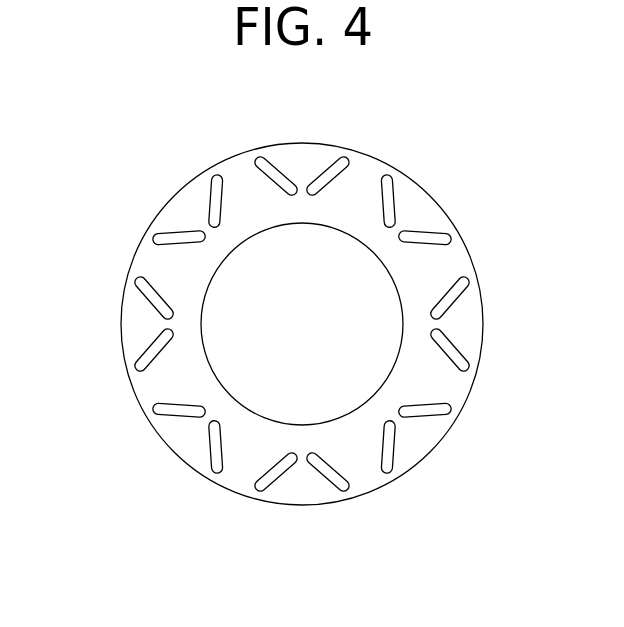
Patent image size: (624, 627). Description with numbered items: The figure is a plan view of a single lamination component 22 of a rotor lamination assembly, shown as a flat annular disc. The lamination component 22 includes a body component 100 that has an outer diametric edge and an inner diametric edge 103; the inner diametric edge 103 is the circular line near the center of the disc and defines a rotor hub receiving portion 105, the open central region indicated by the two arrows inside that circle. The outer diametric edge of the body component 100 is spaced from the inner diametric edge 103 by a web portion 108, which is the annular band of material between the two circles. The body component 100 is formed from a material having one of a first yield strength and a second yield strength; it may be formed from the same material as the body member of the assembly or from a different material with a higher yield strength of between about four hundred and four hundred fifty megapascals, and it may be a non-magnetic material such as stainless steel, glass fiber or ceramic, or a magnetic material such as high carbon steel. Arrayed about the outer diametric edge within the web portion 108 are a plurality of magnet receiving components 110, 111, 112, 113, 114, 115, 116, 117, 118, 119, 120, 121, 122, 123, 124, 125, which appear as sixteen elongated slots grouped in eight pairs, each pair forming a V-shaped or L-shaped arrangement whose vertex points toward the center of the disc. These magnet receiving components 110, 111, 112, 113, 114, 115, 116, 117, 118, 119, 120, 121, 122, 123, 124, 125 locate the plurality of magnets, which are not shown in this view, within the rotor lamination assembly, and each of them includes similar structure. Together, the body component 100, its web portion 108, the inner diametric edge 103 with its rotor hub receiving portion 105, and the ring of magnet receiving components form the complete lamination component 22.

The lamination component 22 is at (452, 533).
The body component 100 is at (300, 508).
The inner diametric edge 103 is at (207, 283).
The rotor hub receiving portion 105 is at (240, 330).
The web portion 108 is at (238, 190).
The magnet receiving component 110 is at (322, 165).
The magnet receiving component 111 is at (400, 195).
The magnet receiving component 112 is at (430, 234).
The magnet receiving component 113 is at (465, 303).
The magnet receiving component 114 is at (463, 352).
The magnet receiving component 115 is at (445, 430).
The magnet receiving component 116 is at (420, 463).
The magnet receiving component 117 is at (325, 486).
The magnet receiving component 118 is at (281, 486).
The magnet receiving component 119 is at (207, 452).
The magnet receiving component 120 is at (128, 395).
The magnet receiving component 121 is at (150, 352).
The magnet receiving component 122 is at (143, 298).
The magnet receiving component 123 is at (185, 235).
The magnet receiving component 124 is at (210, 197).
The magnet receiving component 125 is at (282, 167).